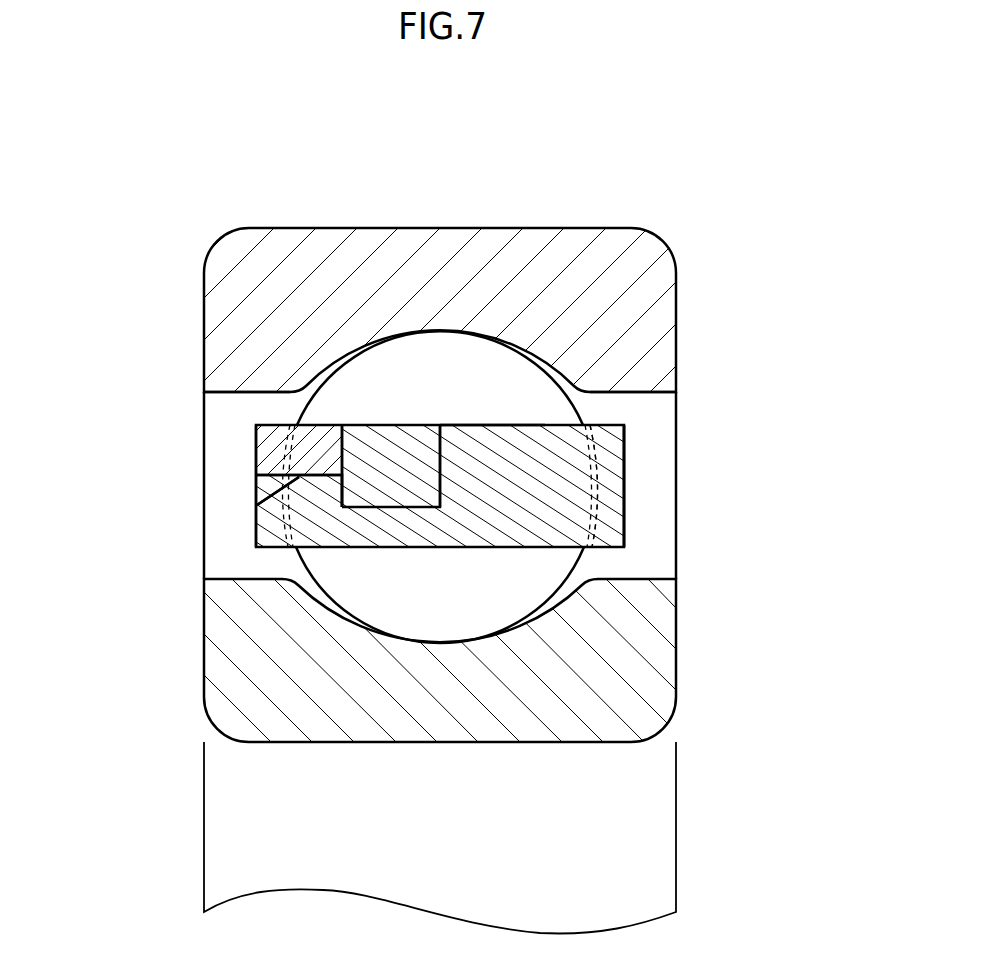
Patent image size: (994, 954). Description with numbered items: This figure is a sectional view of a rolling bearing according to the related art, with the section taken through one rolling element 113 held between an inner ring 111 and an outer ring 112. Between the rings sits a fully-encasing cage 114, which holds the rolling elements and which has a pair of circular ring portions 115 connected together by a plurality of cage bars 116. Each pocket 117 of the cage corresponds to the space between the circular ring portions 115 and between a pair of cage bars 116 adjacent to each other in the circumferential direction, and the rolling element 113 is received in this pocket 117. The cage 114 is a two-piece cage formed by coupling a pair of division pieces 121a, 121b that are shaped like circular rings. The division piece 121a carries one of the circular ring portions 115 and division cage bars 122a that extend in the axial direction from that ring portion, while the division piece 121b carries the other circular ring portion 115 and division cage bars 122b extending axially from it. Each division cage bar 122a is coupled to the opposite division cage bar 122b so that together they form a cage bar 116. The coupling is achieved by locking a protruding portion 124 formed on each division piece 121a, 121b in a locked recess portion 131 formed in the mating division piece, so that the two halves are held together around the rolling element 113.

The inner ring 111 is at (290, 743).
The outer ring 112 is at (447, 228).
The rolling element 113 is at (399, 352).
The fully-encasing cage 114 is at (650, 461).
The circular ring portion 115 is at (617, 485).
The cage bar 116 is at (498, 408).
The pocket 117 is at (592, 525).
The division piece 121a is at (256, 397).
The division piece 121b is at (613, 398).
The division cage bar 122a is at (343, 432).
The division cage bar 122b is at (533, 435).
The protruding portion 124 is at (375, 548).
The locked recess portion 131 is at (335, 495).